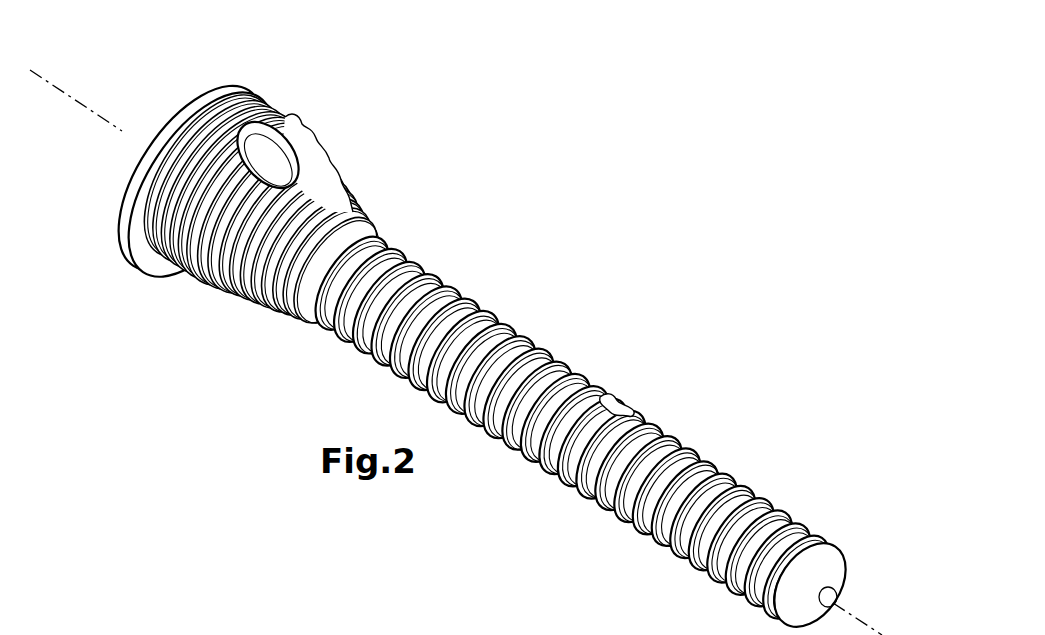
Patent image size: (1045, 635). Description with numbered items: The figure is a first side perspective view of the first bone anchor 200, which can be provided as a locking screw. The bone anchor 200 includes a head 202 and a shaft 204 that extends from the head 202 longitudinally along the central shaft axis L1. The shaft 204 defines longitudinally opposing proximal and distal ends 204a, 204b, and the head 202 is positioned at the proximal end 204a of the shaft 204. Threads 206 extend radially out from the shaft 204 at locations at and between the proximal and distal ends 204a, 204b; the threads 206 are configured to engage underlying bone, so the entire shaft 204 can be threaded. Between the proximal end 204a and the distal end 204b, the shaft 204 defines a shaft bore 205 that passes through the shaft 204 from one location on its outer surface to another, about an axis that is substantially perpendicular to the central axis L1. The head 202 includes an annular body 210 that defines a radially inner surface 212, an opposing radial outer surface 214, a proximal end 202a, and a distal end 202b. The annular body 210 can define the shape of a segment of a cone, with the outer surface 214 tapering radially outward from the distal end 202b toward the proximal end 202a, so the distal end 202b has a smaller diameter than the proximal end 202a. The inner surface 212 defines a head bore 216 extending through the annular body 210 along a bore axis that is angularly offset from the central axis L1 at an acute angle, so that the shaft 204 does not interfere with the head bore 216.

The first bone anchor 200 is at (477, 324).
The head 202 is at (317, 201).
The proximal end of the head 202a is at (234, 84).
The distal end of the head 202b is at (378, 245).
The shaft 204 is at (612, 430).
The proximal end of the shaft 204a is at (405, 262).
The distal end of the shaft 204b is at (830, 553).
The shaft bore 205 is at (617, 403).
The threads 206 is at (530, 345).
The annular body 210 is at (210, 243).
The radially inner surface 212 is at (263, 162).
The radial outer surface 214 is at (330, 178).
The head bore 216 is at (300, 165).
The central shaft axis L1 is at (84, 108).